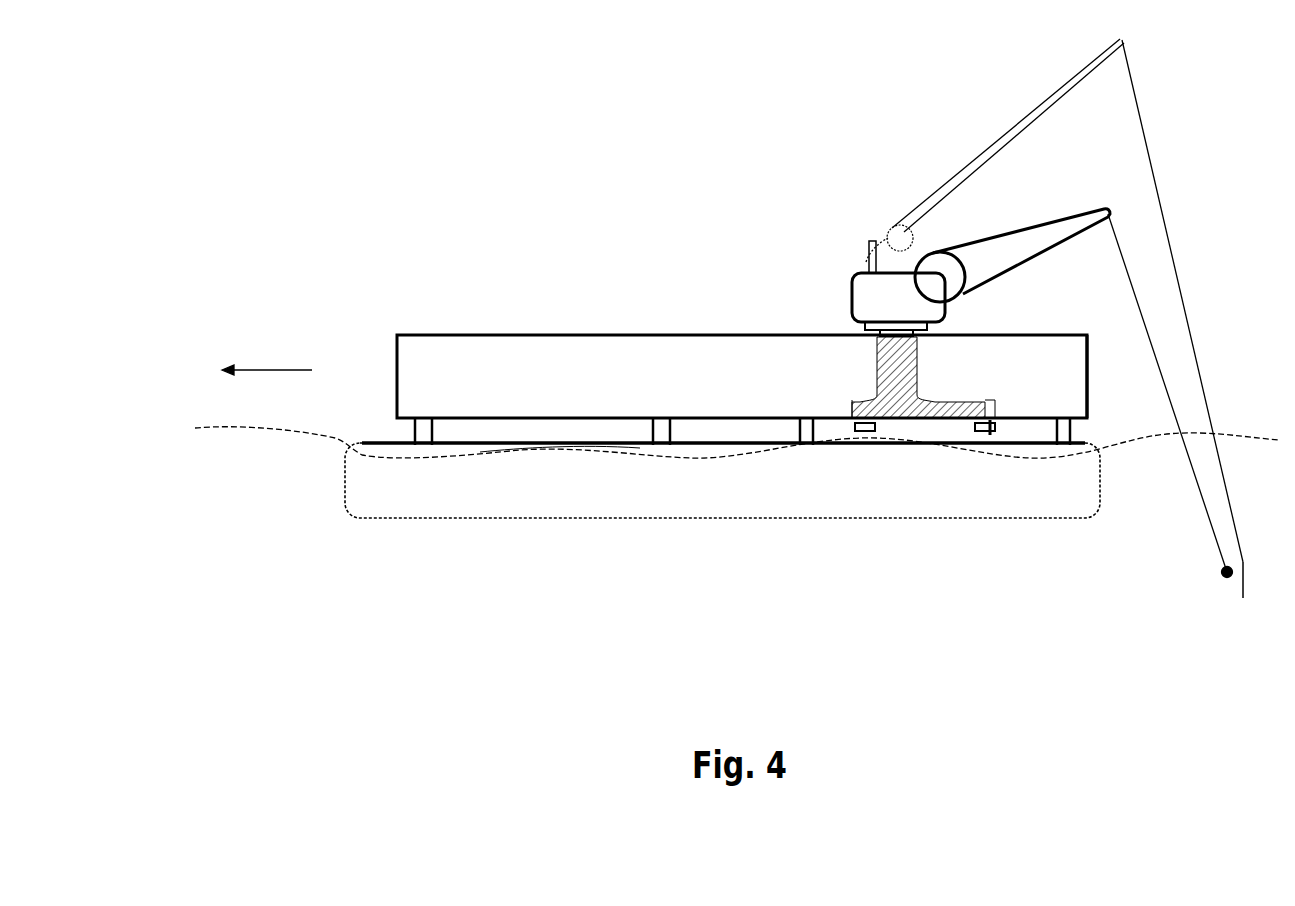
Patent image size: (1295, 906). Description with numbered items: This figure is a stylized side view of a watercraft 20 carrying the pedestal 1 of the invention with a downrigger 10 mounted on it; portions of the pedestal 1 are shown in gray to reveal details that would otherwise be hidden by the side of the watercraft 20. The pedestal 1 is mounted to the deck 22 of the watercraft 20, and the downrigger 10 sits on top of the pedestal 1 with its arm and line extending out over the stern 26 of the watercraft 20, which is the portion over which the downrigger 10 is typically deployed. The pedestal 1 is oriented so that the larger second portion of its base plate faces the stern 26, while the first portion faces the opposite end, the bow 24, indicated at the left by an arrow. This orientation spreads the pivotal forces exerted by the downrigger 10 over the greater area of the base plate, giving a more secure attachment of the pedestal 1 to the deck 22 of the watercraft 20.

The pedestal 1 is at (870, 360).
The downrigger 10 is at (856, 272).
The watercraft 20 is at (506, 335).
The deck 22 is at (628, 418).
The bow 24 is at (397, 335).
The stern 26 is at (1087, 335).